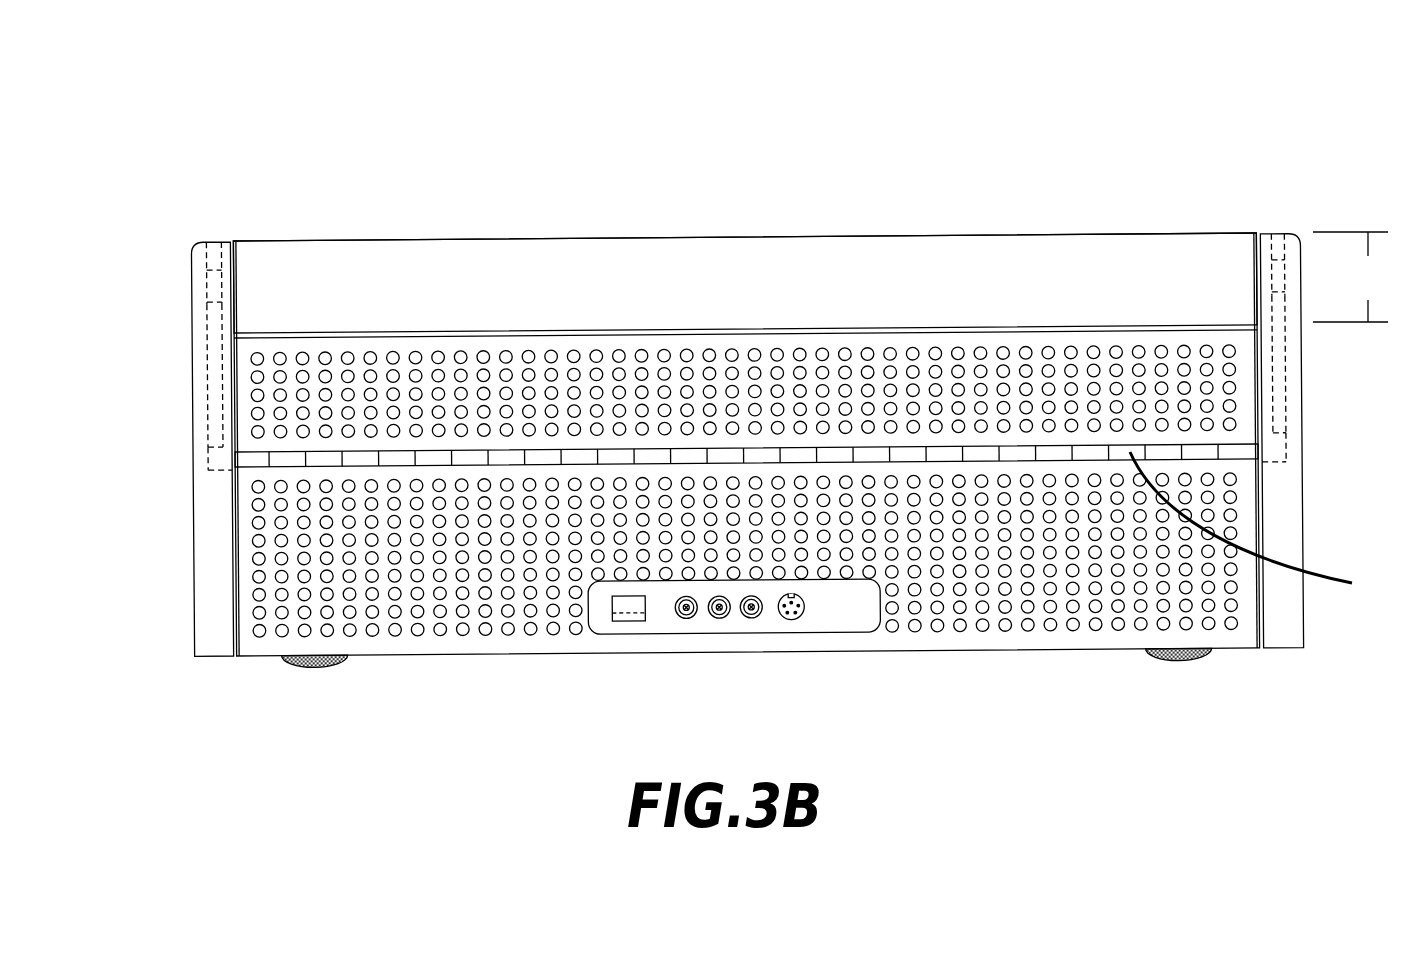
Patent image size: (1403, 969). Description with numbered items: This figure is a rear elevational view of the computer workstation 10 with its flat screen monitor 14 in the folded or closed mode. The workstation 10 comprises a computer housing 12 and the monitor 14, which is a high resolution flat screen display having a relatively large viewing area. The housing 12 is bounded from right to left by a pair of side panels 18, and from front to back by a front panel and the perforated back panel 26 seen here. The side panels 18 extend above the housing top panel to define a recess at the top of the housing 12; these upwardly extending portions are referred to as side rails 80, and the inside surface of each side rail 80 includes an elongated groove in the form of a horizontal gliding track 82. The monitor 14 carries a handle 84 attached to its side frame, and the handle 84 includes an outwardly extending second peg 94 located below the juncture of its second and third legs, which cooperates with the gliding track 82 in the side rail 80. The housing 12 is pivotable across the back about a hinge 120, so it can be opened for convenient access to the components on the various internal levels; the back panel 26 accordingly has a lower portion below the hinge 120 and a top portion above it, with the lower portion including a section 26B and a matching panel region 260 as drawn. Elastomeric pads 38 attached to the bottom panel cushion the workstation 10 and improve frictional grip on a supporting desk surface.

The computer workstation 10 is at (1087, 139).
The computer housing 12 is at (163, 333).
The monitor 14 is at (890, 238).
The side panels 18 is at (193, 462).
The back panel 26 is at (978, 596).
The rear panel section 26B is at (1250, 612).
The elastomeric pads 38 is at (1167, 662).
The side rails 80 is at (1350, 277).
The horizontal gliding track 82 is at (1280, 273).
The handle 84 is at (1287, 357).
The second peg 94 is at (216, 470).
The hinge 120 is at (1266, 526).
The right mounting bracket 260 is at (1305, 427).